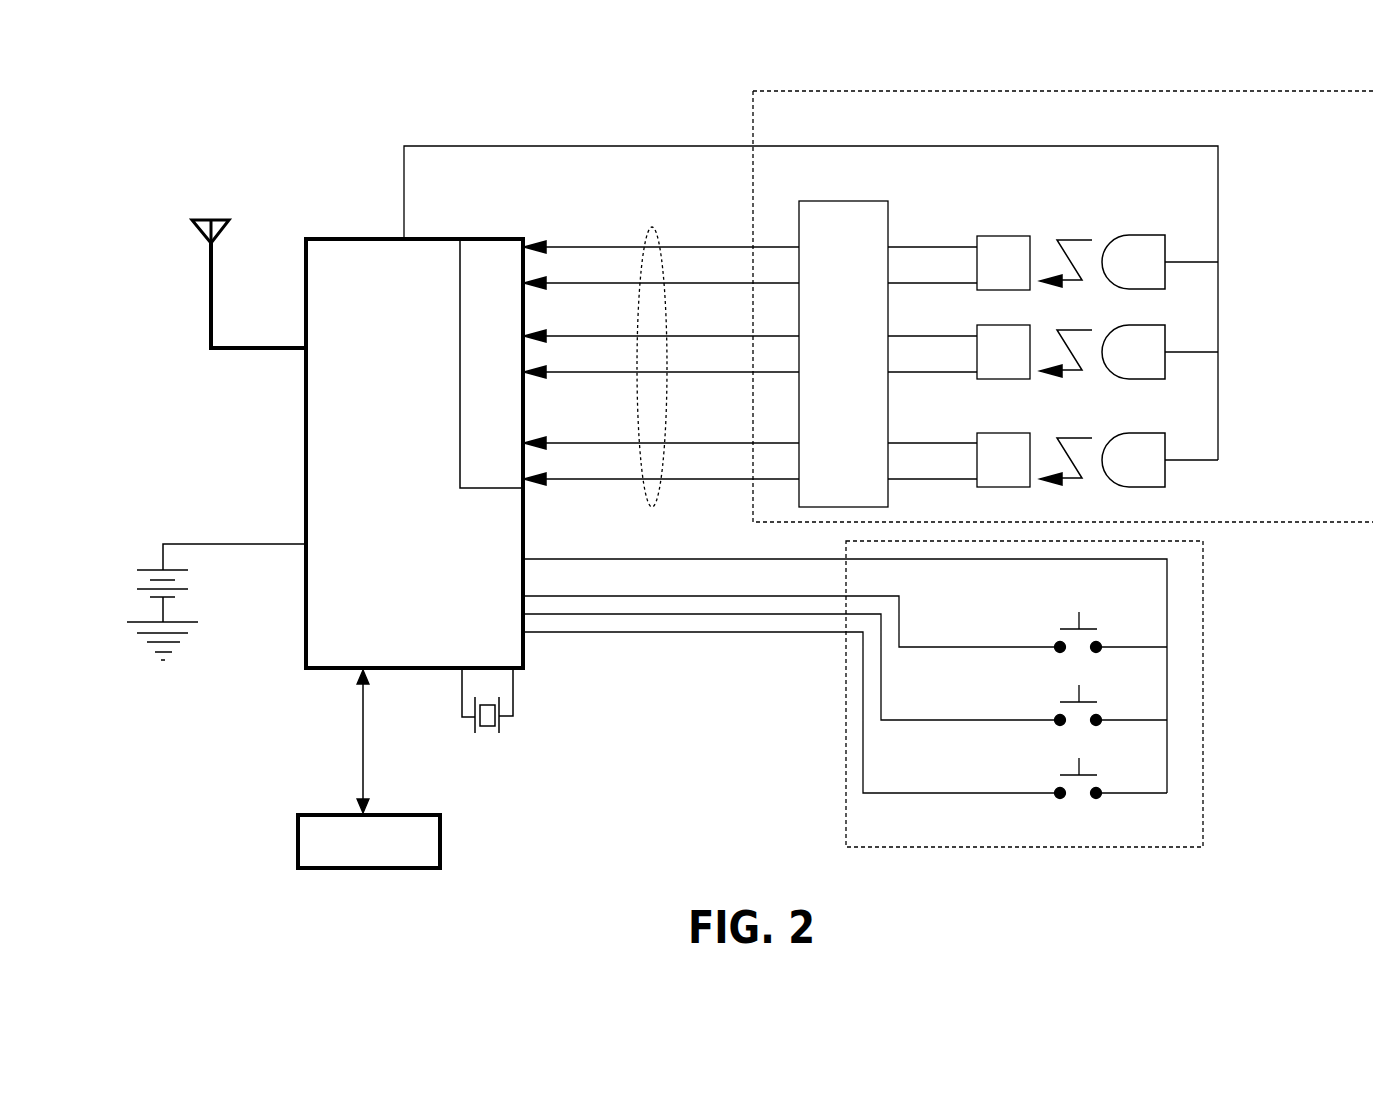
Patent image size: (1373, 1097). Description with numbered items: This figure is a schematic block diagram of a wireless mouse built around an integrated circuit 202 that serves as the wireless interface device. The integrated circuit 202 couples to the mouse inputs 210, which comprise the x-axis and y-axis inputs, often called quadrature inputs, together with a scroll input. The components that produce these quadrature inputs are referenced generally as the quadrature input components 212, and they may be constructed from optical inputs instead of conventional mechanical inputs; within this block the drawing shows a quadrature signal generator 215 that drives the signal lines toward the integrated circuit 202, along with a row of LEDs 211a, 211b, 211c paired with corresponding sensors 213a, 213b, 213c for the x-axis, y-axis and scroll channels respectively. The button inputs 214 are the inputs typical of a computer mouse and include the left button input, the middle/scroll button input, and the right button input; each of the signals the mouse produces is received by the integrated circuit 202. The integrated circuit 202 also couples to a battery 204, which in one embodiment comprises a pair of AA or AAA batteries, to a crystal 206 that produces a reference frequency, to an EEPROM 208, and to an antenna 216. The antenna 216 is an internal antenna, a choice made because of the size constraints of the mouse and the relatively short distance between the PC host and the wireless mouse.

The integrated circuit 202 is at (364, 489).
The battery 204 is at (123, 567).
The crystal 206 is at (600, 788).
The EEPROM 208 is at (353, 868).
The mouse inputs 210 is at (663, 239).
The X-axis LED 211a is at (1147, 290).
The Y-axis LED 211b is at (1147, 379).
The scroll LED 211c is at (1150, 487).
The quadrature input components 212 is at (1163, 91).
The X-axis sensor 213a is at (987, 291).
The Y-axis sensor 213b is at (987, 380).
The scroll sensor 213c is at (983, 488).
The button inputs 214 is at (1203, 660).
The quadrature signal generator 215 is at (845, 201).
The antenna 216 is at (206, 297).